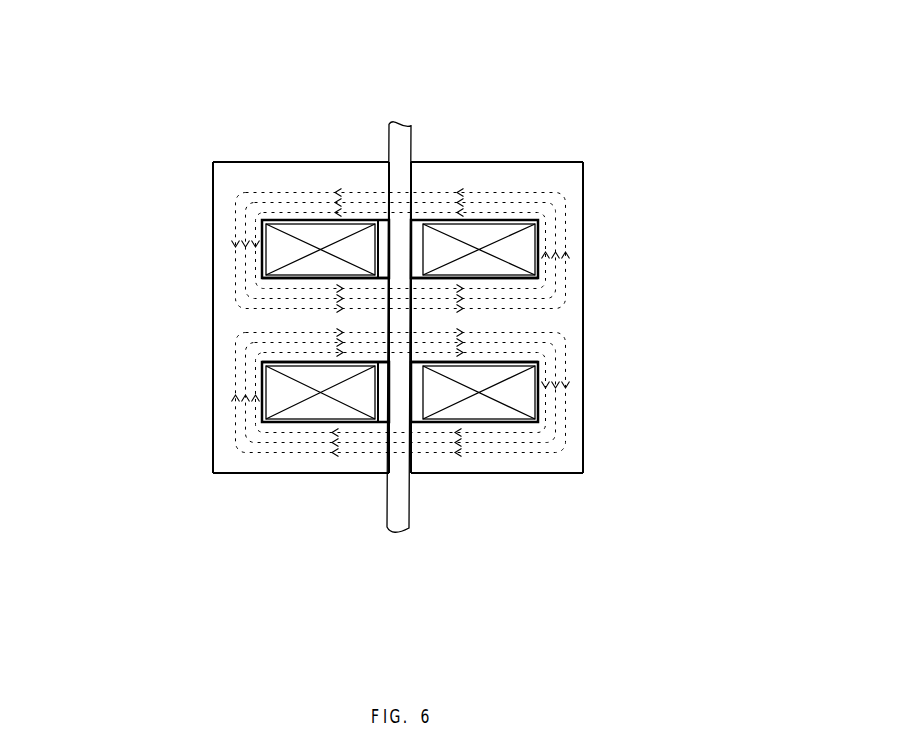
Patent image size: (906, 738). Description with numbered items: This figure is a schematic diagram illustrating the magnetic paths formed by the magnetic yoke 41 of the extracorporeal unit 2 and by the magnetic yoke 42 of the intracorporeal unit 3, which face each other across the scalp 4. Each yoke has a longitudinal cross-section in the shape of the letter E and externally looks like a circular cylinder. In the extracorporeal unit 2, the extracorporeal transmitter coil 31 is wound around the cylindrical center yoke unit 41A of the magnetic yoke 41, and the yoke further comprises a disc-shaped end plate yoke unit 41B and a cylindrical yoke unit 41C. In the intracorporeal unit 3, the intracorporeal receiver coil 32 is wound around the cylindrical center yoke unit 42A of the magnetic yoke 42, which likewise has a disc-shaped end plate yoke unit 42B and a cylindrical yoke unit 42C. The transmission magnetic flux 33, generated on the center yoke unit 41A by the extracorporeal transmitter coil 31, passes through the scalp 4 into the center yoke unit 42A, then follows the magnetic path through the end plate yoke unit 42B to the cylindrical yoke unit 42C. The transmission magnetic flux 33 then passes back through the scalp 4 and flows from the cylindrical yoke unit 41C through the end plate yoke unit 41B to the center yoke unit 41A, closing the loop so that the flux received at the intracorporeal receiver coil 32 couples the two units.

The extracorporeal unit 2 is at (92, 118).
The intracorporeal unit 3 is at (597, 117).
The scalp 4 is at (398, 547).
The extracorporeal transmitter coil 31 is at (289, 327).
The intracorporeal receiver coil 32 is at (472, 232).
The transmission magnetic flux 33 is at (311, 326).
The magnetic yoke 41 is at (217, 317).
The center yoke unit 41A is at (353, 592).
The end plate yoke unit 41B is at (213, 443).
The cylindrical yoke unit 41C is at (293, 457).
The magnetic yoke 42 is at (606, 318).
The center yoke unit 42A is at (507, 490).
The end plate yoke unit 42B is at (610, 366).
The cylindrical yoke unit 42C is at (478, 514).